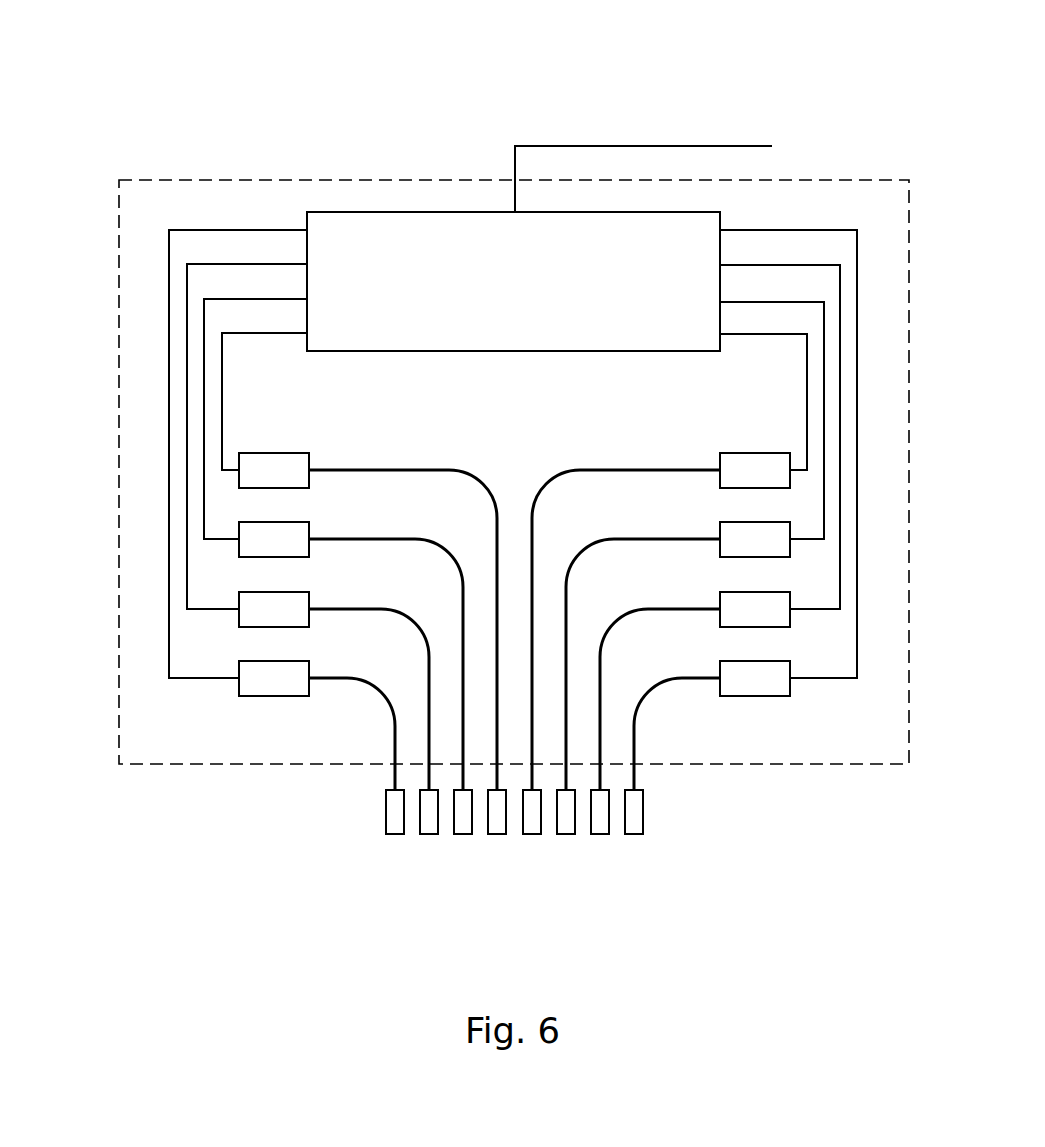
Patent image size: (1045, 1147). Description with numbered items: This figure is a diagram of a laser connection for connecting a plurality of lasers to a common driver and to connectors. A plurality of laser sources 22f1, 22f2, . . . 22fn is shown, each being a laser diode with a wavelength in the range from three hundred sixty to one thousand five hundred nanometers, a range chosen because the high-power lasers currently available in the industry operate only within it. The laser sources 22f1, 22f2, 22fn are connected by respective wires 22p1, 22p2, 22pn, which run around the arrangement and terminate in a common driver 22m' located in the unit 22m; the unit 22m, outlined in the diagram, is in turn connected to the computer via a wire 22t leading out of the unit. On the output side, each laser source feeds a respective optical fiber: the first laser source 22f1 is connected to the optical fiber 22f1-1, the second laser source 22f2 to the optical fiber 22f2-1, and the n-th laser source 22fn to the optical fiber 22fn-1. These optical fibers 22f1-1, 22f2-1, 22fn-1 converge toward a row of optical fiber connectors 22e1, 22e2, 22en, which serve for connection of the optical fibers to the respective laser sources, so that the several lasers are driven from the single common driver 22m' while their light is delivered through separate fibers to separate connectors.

The unit 22m is at (523, 382).
The common driver 22m' is at (460, 197).
The wire 22t is at (618, 146).
The wire 22p1 is at (169, 290).
The wire 22p2 is at (234, 263).
The wire 22pn is at (843, 680).
The laser source 22f1 is at (252, 669).
The laser source 22f2 is at (257, 601).
The laser source 22fn is at (767, 683).
The optical fiber 22f1-1 is at (388, 703).
The optical fiber 22f2-1 is at (428, 737).
The optical fiber 22fn-1 is at (637, 748).
The optical fiber connector 22e1 is at (395, 835).
The optical fiber connector 22e2 is at (430, 835).
The optical fiber connector 22en is at (635, 837).